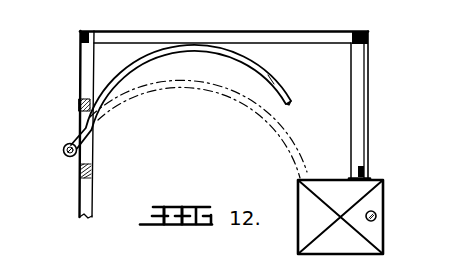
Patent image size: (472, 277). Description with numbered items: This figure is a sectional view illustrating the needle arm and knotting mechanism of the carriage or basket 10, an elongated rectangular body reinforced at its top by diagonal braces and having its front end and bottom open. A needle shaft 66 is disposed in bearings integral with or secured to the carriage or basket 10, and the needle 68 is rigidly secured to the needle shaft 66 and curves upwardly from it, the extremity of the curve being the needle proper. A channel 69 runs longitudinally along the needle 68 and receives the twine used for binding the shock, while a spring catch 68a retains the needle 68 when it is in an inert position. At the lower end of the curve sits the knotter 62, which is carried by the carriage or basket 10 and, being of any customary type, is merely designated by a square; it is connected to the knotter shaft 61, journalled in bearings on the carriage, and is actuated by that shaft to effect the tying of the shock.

The carriage or basket 10 is at (350, 88).
The channel 69 is at (149, 57).
The needle 68 is at (242, 63).
The spring catch 68a is at (76, 103).
The needle shaft 66 is at (64, 157).
The knotter 62 is at (340, 217).
The knotter shaft 61 is at (377, 220).